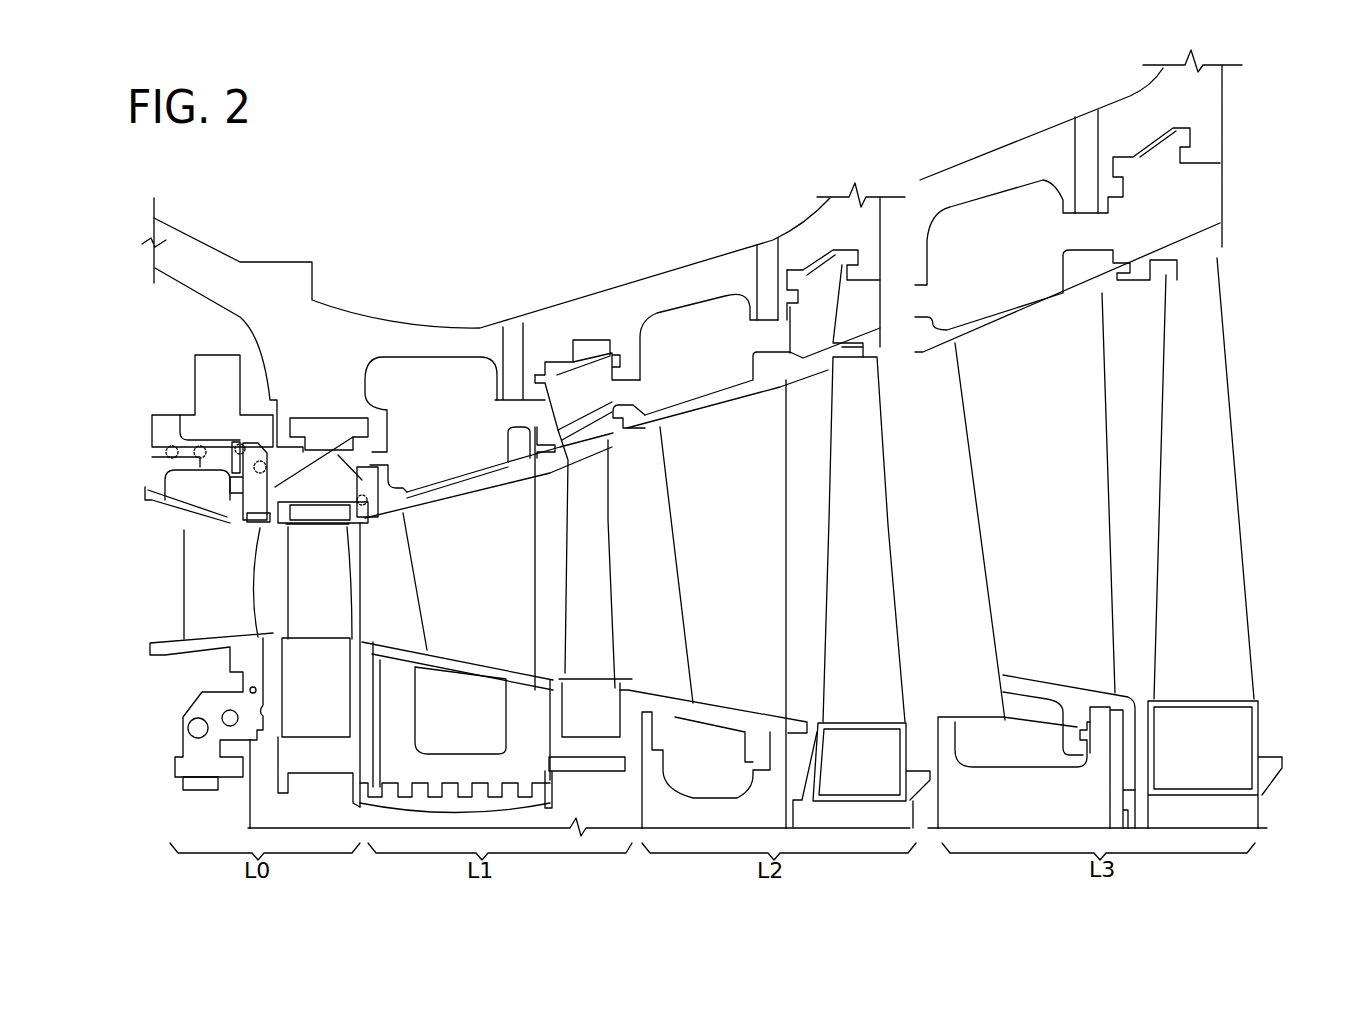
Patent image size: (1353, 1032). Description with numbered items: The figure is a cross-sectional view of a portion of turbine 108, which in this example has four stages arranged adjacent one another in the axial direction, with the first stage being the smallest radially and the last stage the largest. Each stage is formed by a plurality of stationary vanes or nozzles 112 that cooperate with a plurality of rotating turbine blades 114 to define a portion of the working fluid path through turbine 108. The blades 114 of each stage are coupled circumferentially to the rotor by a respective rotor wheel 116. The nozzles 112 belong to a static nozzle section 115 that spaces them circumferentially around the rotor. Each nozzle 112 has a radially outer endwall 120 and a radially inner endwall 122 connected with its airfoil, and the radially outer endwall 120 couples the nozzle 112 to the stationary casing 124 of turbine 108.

The turbine 108 is at (430, 300).
The stationary vanes or nozzles 112 is at (235, 595).
The rotating turbine blades 114 is at (339, 595).
The static nozzle section 115 is at (693, 392).
The rotor wheel 116 is at (315, 758).
The radially outer endwall 120 is at (457, 490).
The radially inner endwall 122 is at (523, 666).
The stationary casing 124 is at (470, 347).